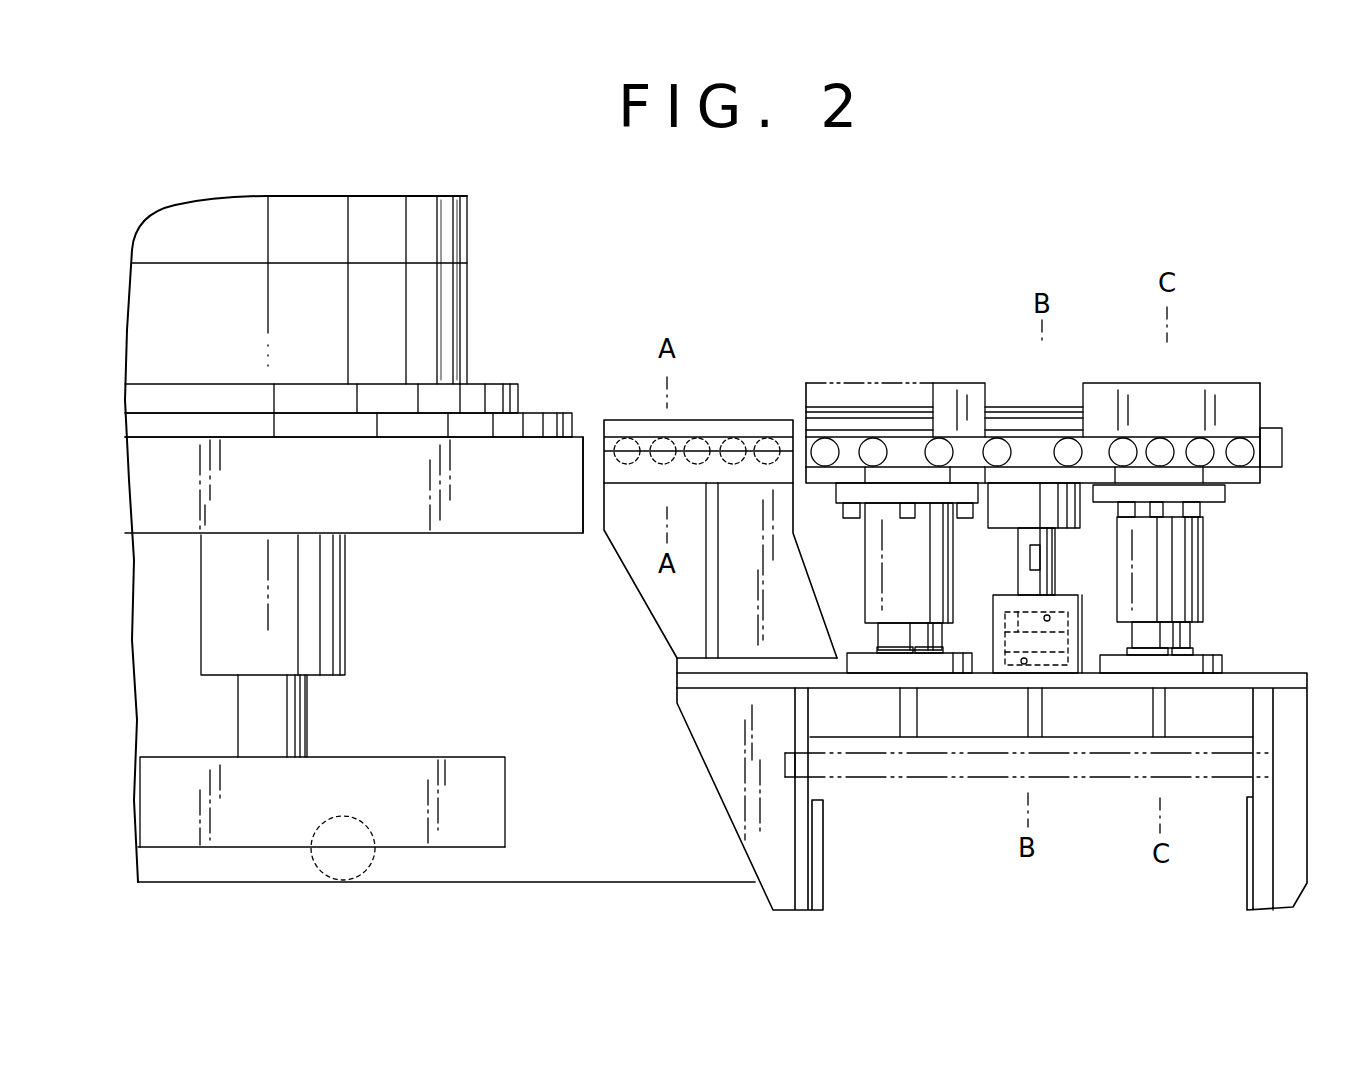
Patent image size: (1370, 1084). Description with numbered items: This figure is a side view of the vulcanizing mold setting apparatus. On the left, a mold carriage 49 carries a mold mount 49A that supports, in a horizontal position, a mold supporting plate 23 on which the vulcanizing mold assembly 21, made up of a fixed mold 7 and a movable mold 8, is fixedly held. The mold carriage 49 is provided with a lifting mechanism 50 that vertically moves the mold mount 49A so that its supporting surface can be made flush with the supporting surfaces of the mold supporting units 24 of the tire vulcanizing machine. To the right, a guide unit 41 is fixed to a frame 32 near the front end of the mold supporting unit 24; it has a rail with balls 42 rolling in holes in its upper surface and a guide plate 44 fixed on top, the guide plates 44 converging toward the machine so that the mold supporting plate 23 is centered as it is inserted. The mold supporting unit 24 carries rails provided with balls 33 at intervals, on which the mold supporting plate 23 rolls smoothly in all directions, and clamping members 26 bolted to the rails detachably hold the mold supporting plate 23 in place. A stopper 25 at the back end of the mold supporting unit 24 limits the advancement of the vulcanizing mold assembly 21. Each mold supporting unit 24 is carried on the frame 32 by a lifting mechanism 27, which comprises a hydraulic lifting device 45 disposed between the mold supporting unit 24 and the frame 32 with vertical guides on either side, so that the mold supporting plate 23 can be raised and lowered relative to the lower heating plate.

The fixed mold 7 is at (445, 333).
The movable mold 8 is at (445, 242).
The vulcanizing mold assembly 21 is at (490, 272).
The mold supporting plate 23 is at (535, 420).
The mold supporting unit 24 is at (1263, 405).
The stopper 25 is at (1270, 453).
The clamping member 26 is at (953, 390).
The lifting mechanism 27 is at (1196, 579).
The frame 32 is at (968, 723).
The ball 33 is at (1060, 440).
The guide unit 41 is at (640, 508).
The ball 42 is at (728, 440).
The guide plate 44 is at (627, 428).
The lifting device 45 is at (1070, 682).
The mold carriage 49 is at (393, 756).
The mold mount 49A is at (475, 428).
The lifting mechanism 50 is at (320, 652).